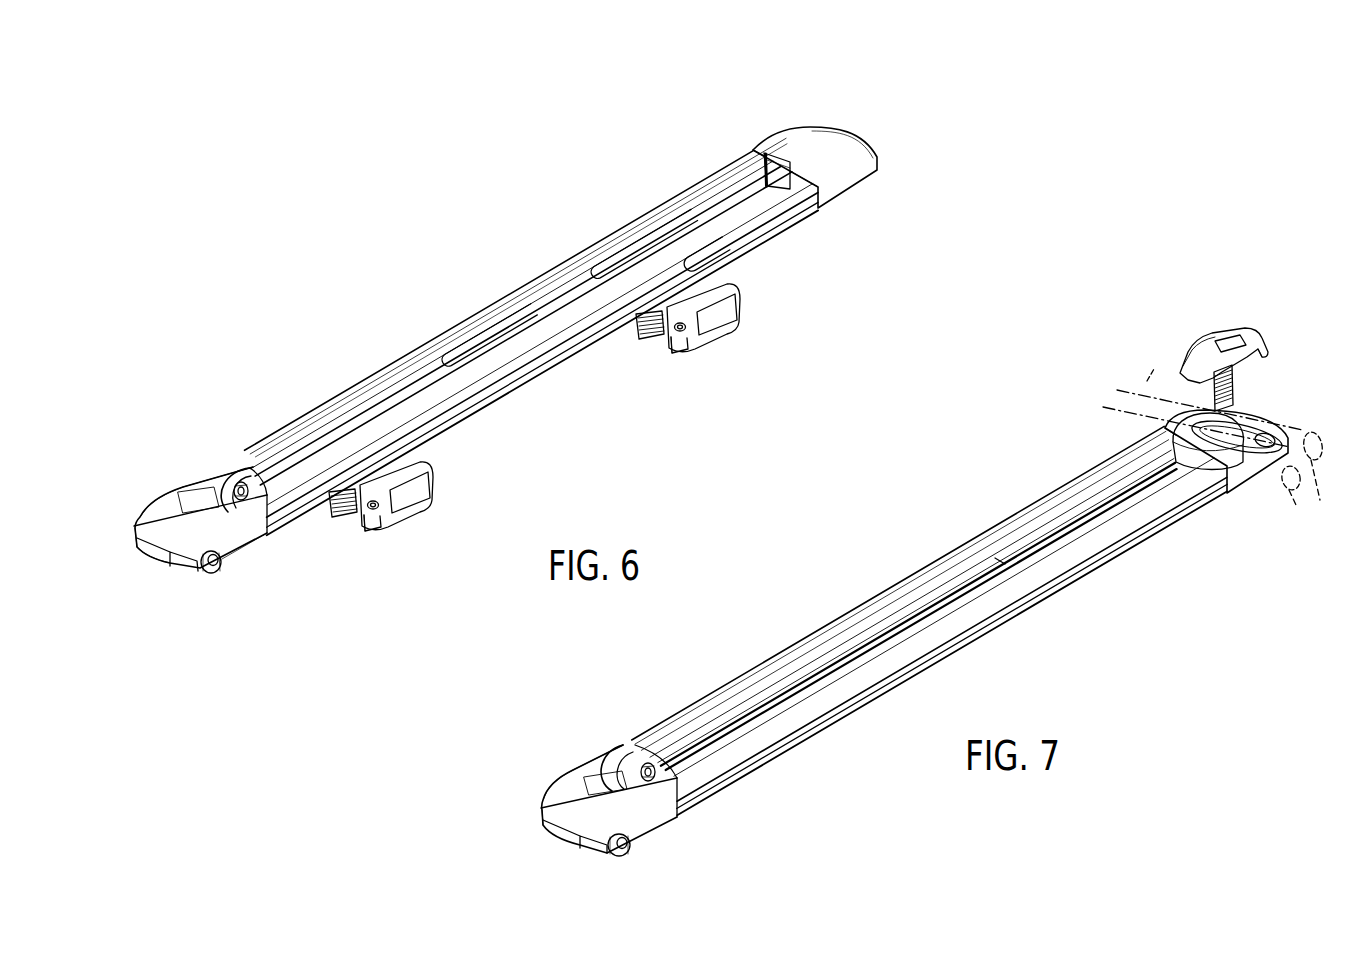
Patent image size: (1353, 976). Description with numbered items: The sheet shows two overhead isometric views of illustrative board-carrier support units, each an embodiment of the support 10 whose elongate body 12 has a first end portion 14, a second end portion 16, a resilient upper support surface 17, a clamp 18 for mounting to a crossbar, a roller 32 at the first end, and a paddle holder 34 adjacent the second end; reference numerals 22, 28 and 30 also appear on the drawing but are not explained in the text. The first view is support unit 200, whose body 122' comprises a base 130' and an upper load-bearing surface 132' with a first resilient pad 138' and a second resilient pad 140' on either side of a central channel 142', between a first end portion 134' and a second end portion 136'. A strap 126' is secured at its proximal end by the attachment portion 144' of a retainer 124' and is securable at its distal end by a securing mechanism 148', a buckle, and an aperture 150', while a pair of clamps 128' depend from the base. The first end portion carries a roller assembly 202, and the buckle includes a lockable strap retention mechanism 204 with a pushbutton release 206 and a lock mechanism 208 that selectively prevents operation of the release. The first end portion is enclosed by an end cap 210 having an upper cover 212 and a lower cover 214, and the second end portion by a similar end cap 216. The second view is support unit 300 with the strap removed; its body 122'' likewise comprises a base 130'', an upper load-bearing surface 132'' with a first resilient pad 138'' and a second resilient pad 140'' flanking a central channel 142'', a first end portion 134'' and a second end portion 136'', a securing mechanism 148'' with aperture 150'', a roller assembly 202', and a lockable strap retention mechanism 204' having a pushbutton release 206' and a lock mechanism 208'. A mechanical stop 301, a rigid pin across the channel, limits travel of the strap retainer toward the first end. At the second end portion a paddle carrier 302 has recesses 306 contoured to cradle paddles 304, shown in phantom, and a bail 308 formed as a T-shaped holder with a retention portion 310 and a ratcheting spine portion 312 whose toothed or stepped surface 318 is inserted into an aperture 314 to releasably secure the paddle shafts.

In FIG. 6, the support 10 is at (418, 196).
In FIG. 7, the support 10 is at (830, 490).
In FIG. 6, the elongate body 12 is at (598, 346).
In FIG. 7, the elongate body 12 is at (936, 676).
In FIG. 6, the first end portion 14 is at (156, 478).
In FIG. 7, the first end portion 14 is at (687, 833).
In FIG. 6, the second end portion 16 is at (793, 128).
In FIG. 7, the second end portion 16 is at (1226, 526).
In FIG. 6, the upper support surface 17 is at (333, 400).
In FIG. 7, the upper support surface 17 is at (841, 619).
In FIG. 6, the clamp 18 is at (416, 509).
In FIG. 6, the slider pad 22 is at (620, 262).
In FIG. 6, the latch tab 28 is at (694, 226).
In FIG. 6, the end cap housing 30 is at (170, 598).
In FIG. 7, the end cap housing 30 is at (530, 808).
In FIG. 6, the roller 32 is at (262, 480).
In FIG. 7, the roller 32 is at (638, 758).
In FIG. 7, the paddle holder 34 is at (1170, 309).
In FIG. 6, the body 122' is at (542, 372).
In FIG. 6, the retainer 124' is at (733, 186).
In FIG. 6, the strap 126' is at (519, 306).
In FIG. 6, the clamps 128' is at (557, 466).
In FIG. 6, the base 130' is at (542, 364).
In FIG. 6, the upper load-bearing surface 132' is at (805, 215).
In FIG. 6, the first end portion 134' is at (193, 440).
In FIG. 6, the second end portion 136' is at (748, 115).
In FIG. 6, the first resilient pad 138' is at (518, 322).
In FIG. 6, the second resilient pad 140' is at (518, 296).
In FIG. 6, the central channel 142' is at (526, 306).
In FIG. 6, the attachment portion 144' is at (710, 162).
In FIG. 6, the securing mechanism 148' is at (198, 466).
In FIG. 6, the aperture 150' is at (239, 459).
In FIG. 6, the support unit 200 is at (382, 247).
In FIG. 6, the roller assembly 202 is at (249, 448).
In FIG. 6, the lockable strap retention mechanism 204 is at (117, 560).
In FIG. 6, the pushbutton release 206 is at (165, 574).
In FIG. 6, the lock mechanism 208 is at (216, 585).
In FIG. 6, the end cap 210 is at (130, 511).
In FIG. 6, the upper cover 212 is at (242, 516).
In FIG. 6, the lower cover 214 is at (230, 556).
In FIG. 6, the end cap 216 is at (866, 132).
In FIG. 7, the support unit 300 is at (870, 431).
In FIG. 7, the mechanical stop 301 is at (1000, 560).
In FIG. 7, the paddle carrier 302 is at (1292, 405).
In FIG. 7, the paddle 304 is at (1314, 492).
In FIG. 7, the recess 306 is at (1256, 434).
In FIG. 7, the bail 308 is at (1282, 330).
In FIG. 7, the retention portion 310 is at (1208, 346).
In FIG. 7, the spine portion 312 is at (1236, 392).
In FIG. 7, the aperture 314 is at (1224, 452).
In FIG. 7, the toothed or stepped surface 318 is at (1210, 400).
In FIG. 7, the body 122'' is at (952, 653).
In FIG. 7, the base 130'' is at (952, 655).
In FIG. 7, the upper load-bearing surface 132'' is at (739, 697).
In FIG. 7, the first end portion 134'' is at (581, 727).
In FIG. 7, the second end portion 136'' is at (1225, 498).
In FIG. 7, the first resilient pad 138'' is at (913, 603).
In FIG. 7, the second resilient pad 140'' is at (902, 591).
In FIG. 7, the central channel 142'' is at (919, 617).
In FIG. 7, the securing mechanism 148'' is at (622, 718).
In FIG. 7, the aperture 150'' is at (670, 711).
In FIG. 7, the roller assembly 202' is at (639, 734).
In FIG. 7, the lockable strap retention mechanism 204' is at (501, 839).
In FIG. 7, the pushbutton release 206' is at (556, 844).
In FIG. 7, the lock mechanism 208' is at (629, 868).